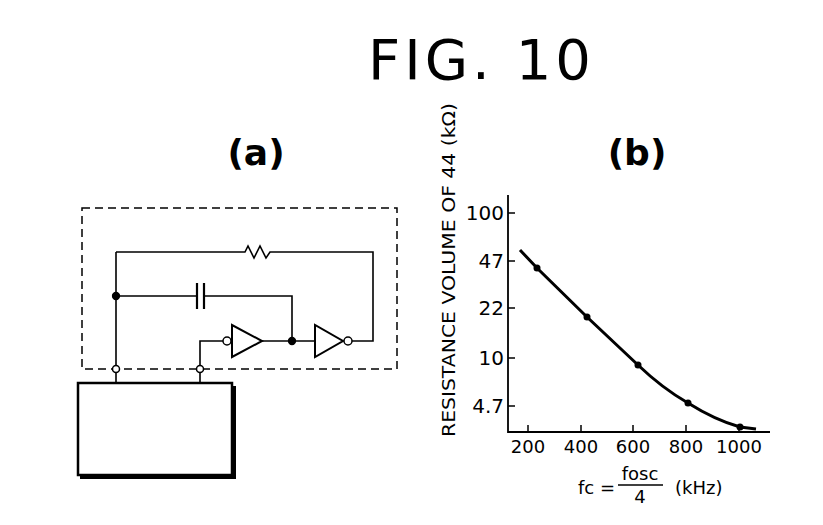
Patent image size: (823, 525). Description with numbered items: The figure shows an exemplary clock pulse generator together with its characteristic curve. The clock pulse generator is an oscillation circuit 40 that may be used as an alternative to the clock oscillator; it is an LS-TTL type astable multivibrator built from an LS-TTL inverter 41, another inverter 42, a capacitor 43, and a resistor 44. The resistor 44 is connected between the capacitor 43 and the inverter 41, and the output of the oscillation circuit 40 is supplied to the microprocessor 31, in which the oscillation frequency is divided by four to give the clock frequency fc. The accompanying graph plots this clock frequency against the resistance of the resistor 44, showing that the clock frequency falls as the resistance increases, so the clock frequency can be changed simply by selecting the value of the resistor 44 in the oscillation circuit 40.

The microprocessor 31 is at (78, 437).
The oscillation circuit 40 is at (82, 262).
The LS-TTL inverter 41 is at (329, 328).
The inverter 42 is at (247, 328).
The capacitor 43 is at (204, 288).
The resistor 44 is at (262, 252).